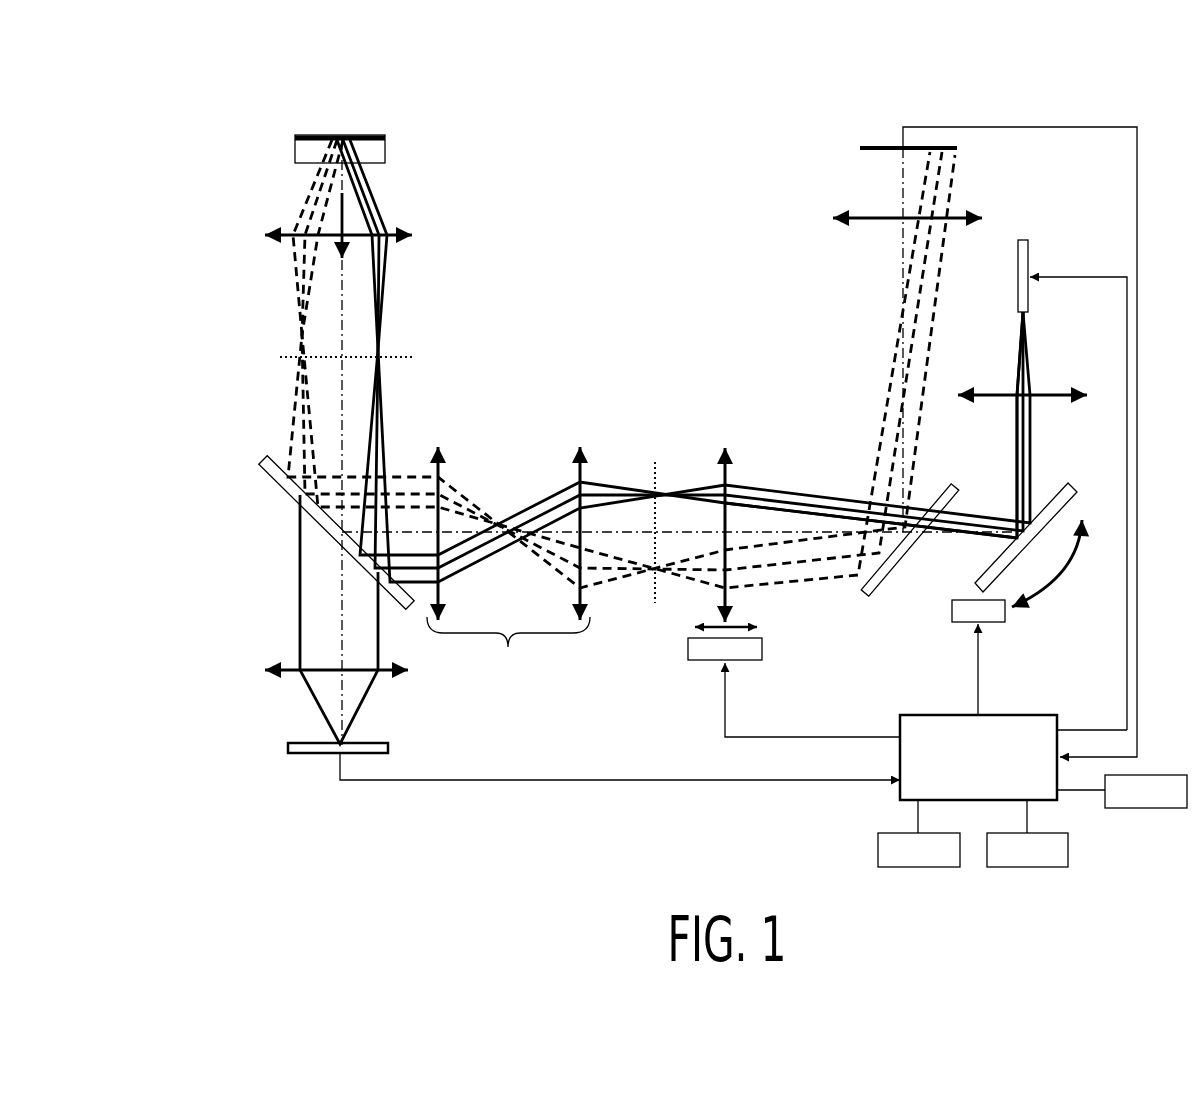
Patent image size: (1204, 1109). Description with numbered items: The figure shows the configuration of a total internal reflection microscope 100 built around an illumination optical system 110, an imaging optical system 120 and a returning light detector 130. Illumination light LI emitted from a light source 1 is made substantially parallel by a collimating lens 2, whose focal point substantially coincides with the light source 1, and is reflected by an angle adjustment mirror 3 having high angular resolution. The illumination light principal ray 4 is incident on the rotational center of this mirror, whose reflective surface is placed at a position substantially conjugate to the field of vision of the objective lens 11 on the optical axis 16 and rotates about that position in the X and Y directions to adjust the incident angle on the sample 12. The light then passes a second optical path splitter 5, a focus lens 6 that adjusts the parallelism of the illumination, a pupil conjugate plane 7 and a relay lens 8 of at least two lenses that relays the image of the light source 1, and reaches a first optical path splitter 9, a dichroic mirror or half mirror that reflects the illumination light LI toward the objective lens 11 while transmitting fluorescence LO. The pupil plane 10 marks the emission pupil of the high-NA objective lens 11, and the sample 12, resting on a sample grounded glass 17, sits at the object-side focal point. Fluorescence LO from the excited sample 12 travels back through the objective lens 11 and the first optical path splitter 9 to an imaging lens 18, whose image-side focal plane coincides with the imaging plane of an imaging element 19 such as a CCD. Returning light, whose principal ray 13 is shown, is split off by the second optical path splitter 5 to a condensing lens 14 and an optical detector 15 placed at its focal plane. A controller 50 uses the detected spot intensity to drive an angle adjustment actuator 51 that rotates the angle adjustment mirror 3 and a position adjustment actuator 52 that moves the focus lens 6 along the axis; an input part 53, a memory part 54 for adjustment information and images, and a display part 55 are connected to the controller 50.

The light source 1 is at (1030, 242).
The collimating lens 2 is at (1088, 395).
The angle adjustment mirror 3 is at (1072, 483).
The illumination light principal ray 4 is at (787, 500).
The second optical path splitter 5 is at (955, 487).
The focus lens 6 is at (725, 448).
The pupil conjugate plane 7 is at (655, 462).
The relay lens 8 is at (508, 569).
The first optical path splitter 9 is at (318, 527).
The pupil plane 10 is at (414, 356).
The objective lens 11 is at (411, 237).
The sample 12 is at (386, 137).
The principal ray of the returning light 13 is at (293, 268).
The condensing lens 14 is at (832, 218).
The optical detector 15 is at (886, 147).
The optical axis 16 is at (358, 415).
The sample grounded glass 17 is at (295, 150).
The imaging lens 18 is at (410, 672).
The imaging element 19 is at (288, 749).
The controller 50 is at (1012, 715).
The angle adjustment actuator 51 is at (952, 612).
The position adjustment actuator 52 is at (688, 651).
The input part 53 is at (878, 850).
The memory part 54 is at (1068, 855).
The display part 55 is at (1175, 775).
The total internal reflection microscope 100 is at (1045, 118).
The illumination optical system 110 is at (686, 367).
The imaging optical system 120 is at (466, 287).
The returning light detector 130 is at (808, 133).
The fluorescence LO is at (343, 217).
The illumination light LI is at (1033, 388).